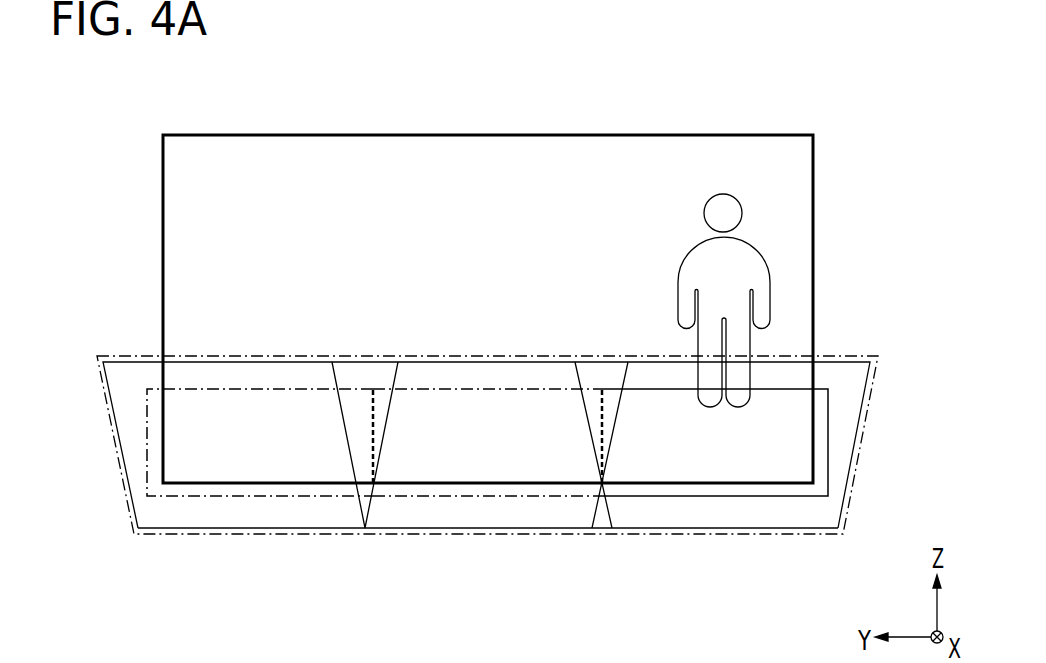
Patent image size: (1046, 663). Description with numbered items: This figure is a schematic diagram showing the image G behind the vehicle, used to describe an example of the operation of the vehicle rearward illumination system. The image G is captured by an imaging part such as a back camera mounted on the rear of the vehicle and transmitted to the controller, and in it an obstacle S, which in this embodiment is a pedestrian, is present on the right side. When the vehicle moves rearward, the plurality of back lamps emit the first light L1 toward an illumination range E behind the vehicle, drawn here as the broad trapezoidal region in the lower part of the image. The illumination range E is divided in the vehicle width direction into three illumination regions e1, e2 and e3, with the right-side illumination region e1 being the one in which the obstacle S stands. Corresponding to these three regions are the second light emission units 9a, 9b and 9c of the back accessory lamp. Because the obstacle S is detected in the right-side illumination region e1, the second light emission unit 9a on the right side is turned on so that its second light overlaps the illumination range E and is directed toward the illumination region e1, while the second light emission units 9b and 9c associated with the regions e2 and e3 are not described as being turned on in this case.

The image behind the vehicle G is at (402, 133).
The obstacle (pedestrian) S is at (763, 255).
The illumination range E is at (482, 355).
The first light L1 is at (486, 445).
The illumination region on the right side e1 is at (718, 530).
The illumination region e2 is at (473, 530).
The illumination region e3 is at (242, 529).
The second light emission unit 9a is at (748, 497).
The second light emission unit 9b is at (502, 497).
The second light emission unit 9c is at (272, 497).